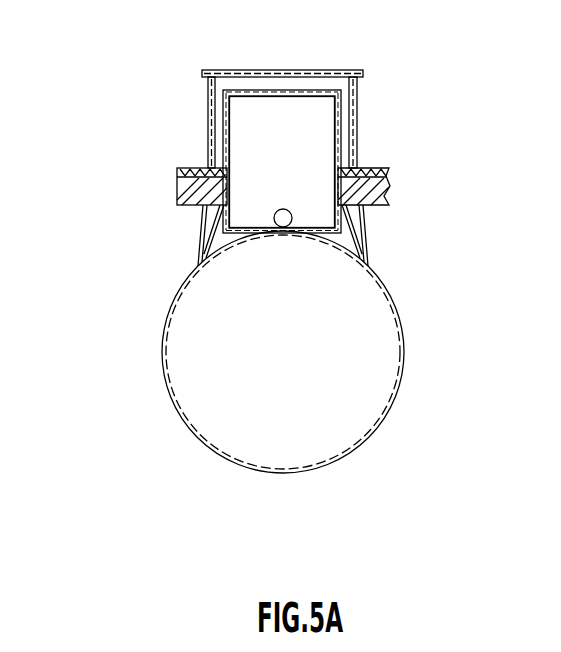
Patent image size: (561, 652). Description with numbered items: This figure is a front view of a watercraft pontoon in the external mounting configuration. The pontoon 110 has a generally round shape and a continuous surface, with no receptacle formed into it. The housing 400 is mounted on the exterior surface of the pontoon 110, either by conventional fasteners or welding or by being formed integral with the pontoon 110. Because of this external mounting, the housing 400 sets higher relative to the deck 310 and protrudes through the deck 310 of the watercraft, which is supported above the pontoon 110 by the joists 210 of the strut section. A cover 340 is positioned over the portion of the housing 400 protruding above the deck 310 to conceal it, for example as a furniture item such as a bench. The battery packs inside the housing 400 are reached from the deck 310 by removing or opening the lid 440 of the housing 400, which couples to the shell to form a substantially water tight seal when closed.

The pontoon 110 is at (298, 375).
The joist 210 is at (177, 188).
The deck 310 is at (373, 168).
The cover 340 is at (363, 73).
The housing 400 is at (298, 167).
The lid 440 is at (228, 97).